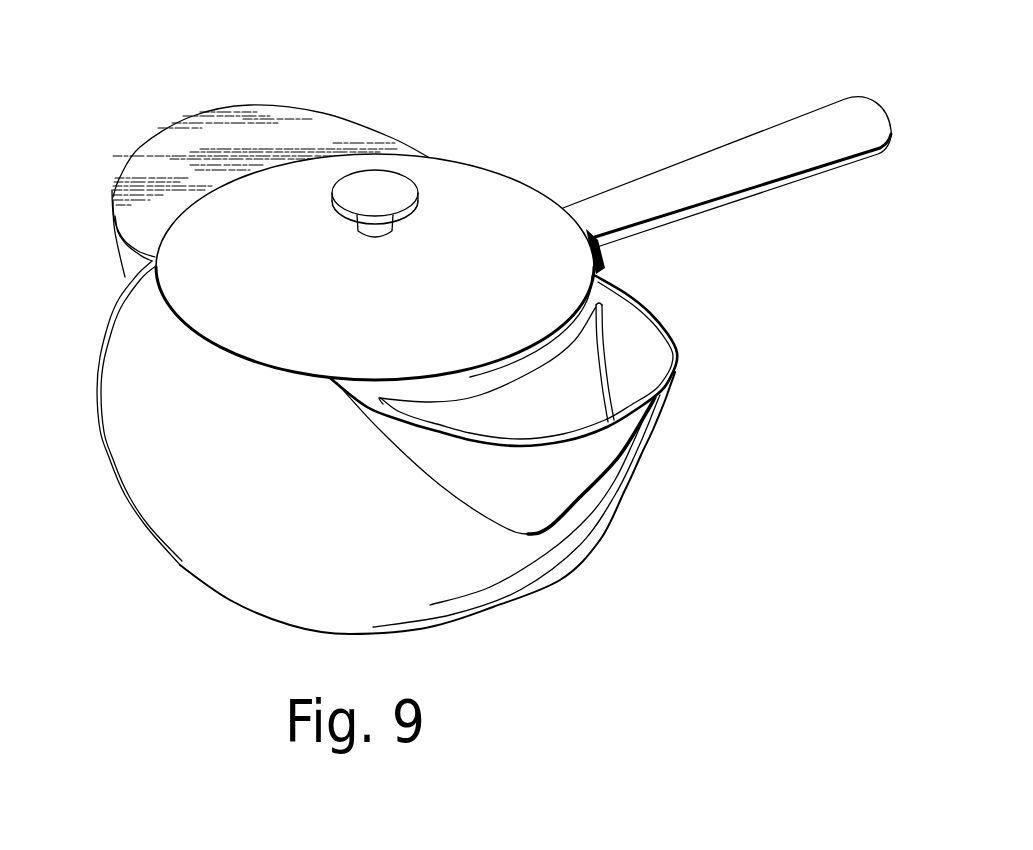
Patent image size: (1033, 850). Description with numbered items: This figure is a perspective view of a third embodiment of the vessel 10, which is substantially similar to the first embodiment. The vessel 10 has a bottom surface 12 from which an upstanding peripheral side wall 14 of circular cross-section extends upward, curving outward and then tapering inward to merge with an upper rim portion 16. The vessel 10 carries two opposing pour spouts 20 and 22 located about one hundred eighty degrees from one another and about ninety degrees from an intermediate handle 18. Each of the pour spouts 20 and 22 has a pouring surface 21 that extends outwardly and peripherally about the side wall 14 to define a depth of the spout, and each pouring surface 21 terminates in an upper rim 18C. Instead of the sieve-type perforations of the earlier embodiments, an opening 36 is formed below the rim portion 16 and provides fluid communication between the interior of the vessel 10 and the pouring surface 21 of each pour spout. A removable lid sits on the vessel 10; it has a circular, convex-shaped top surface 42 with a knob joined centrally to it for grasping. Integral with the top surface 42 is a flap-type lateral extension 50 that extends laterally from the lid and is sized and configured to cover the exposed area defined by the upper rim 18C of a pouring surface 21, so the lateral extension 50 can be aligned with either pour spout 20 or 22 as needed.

The vessel 10 is at (248, 82).
The bottom surface 12 is at (260, 613).
The side wall 14 is at (160, 493).
The rim portion 16 is at (600, 268).
The handle 18 is at (745, 152).
The upper rim 18C is at (680, 377).
The pour spout 20 is at (595, 457).
The pouring surface 21 is at (648, 363).
The pour spout 22 is at (130, 253).
The opening 36 is at (562, 402).
The top surface 42 is at (437, 173).
The lateral extension 50 is at (148, 170).